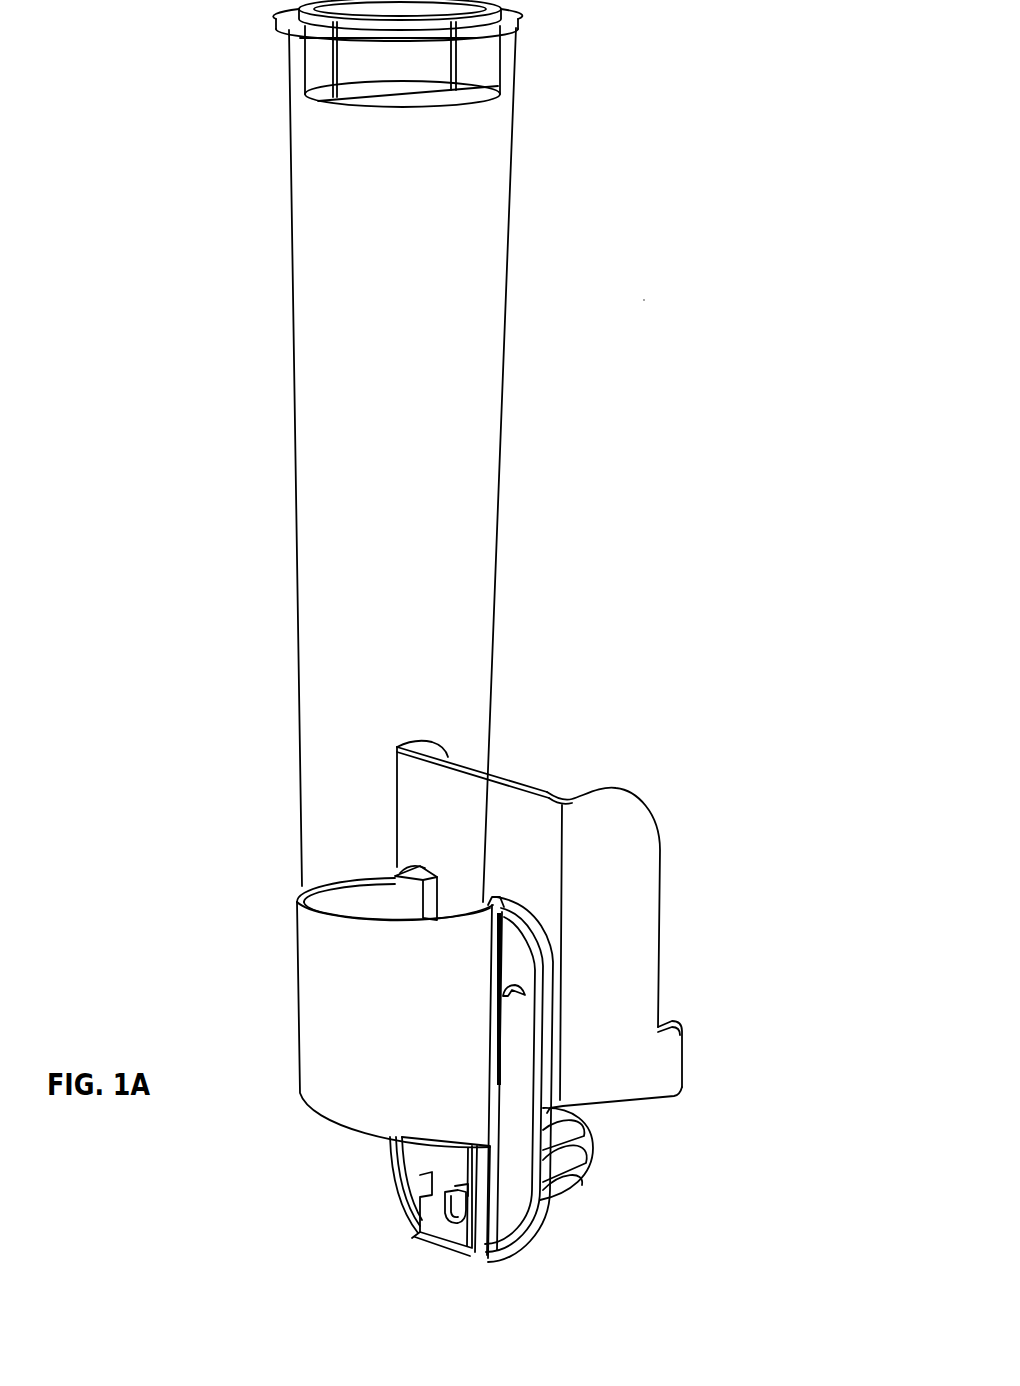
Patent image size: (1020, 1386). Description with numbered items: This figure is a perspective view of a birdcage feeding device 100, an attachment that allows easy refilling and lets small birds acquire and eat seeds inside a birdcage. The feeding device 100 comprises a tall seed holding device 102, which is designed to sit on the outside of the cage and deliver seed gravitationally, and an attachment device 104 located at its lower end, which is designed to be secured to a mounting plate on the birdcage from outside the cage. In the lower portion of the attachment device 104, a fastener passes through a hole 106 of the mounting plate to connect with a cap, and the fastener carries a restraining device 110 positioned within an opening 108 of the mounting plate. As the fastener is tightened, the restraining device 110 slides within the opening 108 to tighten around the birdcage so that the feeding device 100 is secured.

The birdcage feeding device 100 is at (644, 300).
The seed holding device 102 is at (262, 508).
The attachment device 104 is at (697, 875).
The hole 106 is at (450, 1223).
The opening 108 is at (472, 1262).
The restraining device 110 is at (447, 1160).